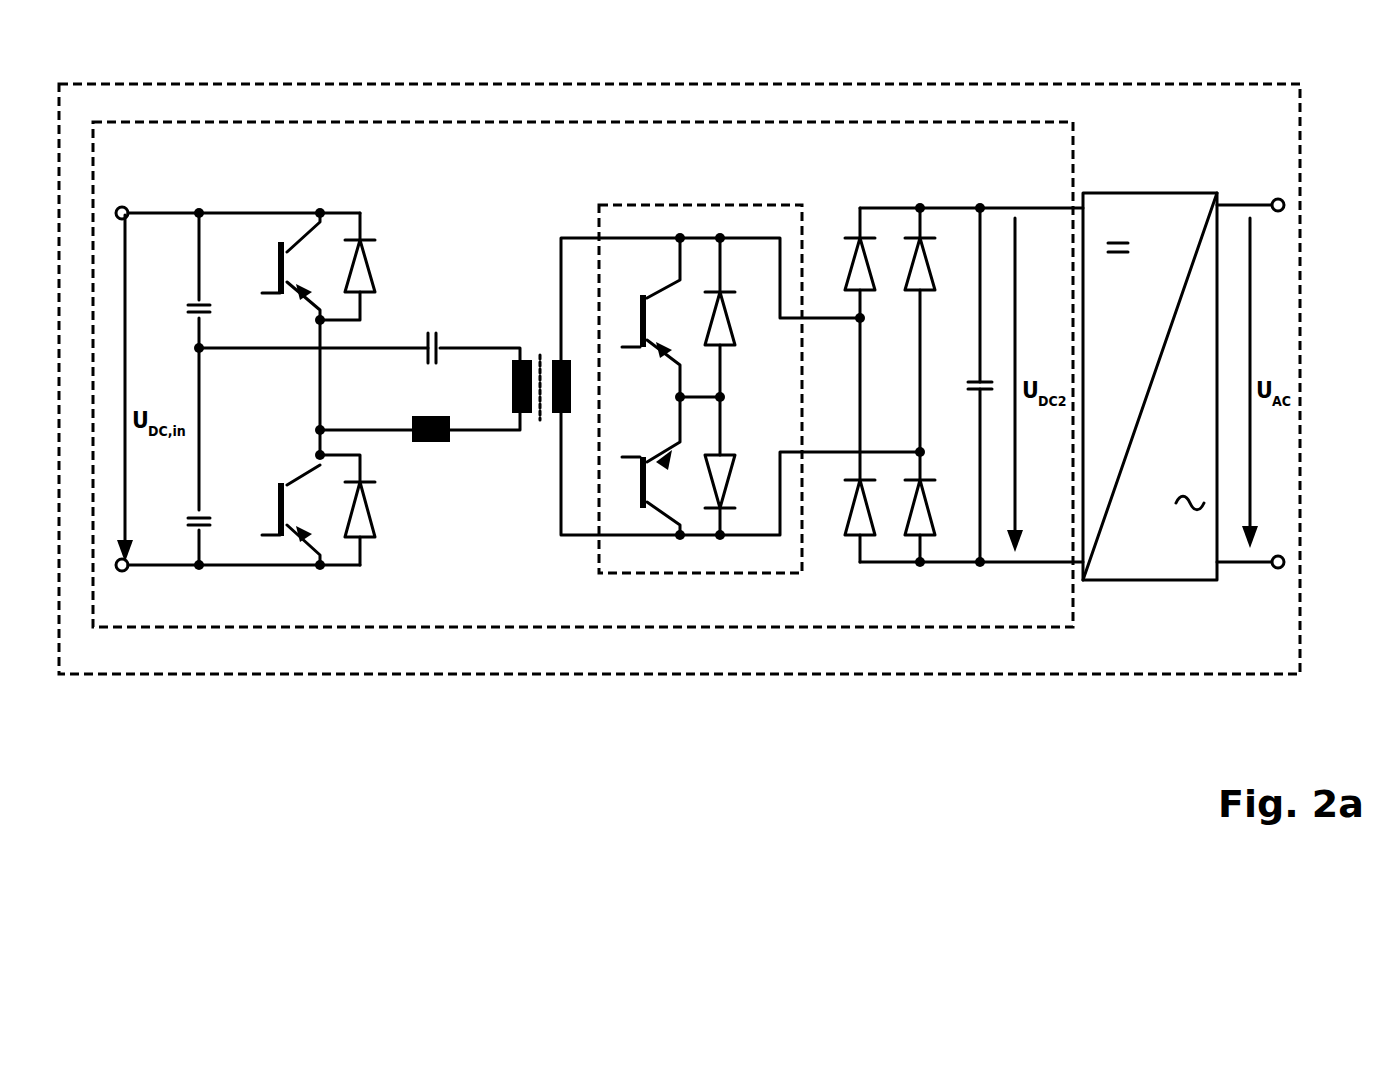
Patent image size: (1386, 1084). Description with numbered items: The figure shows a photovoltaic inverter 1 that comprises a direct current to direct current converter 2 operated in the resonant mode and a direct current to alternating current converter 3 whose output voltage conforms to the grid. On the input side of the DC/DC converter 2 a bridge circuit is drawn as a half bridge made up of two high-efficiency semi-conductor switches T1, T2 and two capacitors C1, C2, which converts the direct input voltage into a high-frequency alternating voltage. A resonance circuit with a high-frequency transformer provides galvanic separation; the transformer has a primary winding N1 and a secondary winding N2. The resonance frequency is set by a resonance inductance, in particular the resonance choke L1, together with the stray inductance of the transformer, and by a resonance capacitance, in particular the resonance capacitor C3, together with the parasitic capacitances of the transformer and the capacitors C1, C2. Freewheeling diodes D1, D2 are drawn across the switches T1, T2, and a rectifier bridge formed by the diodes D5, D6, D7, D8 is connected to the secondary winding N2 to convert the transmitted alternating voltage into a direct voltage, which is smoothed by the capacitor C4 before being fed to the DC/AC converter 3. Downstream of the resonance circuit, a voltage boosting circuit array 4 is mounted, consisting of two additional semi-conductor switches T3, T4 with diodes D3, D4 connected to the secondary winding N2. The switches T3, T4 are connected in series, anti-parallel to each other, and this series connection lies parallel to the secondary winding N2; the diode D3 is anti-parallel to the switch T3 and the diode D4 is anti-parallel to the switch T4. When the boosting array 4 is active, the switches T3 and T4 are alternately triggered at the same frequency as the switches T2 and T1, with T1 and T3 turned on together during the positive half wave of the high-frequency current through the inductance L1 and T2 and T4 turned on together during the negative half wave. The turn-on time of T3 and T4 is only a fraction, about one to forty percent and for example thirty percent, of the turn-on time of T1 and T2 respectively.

The photovoltaic inverter 1 is at (1274, 86).
The DC/DC converter 2 is at (731, 126).
The DC/AC converter 3 is at (1156, 212).
The voltage boosting circuit array 4 is at (600, 558).
The capacitor C1 is at (180, 314).
The capacitor C2 is at (180, 528).
The resonance capacitor C3 is at (430, 329).
The intermediate circuit capacitor C4 is at (962, 393).
The semi-conductor switch T1 is at (276, 512).
The semi-conductor switch T2 is at (276, 271).
The semi-conductor switch T3 is at (636, 326).
The semi-conductor switch T4 is at (636, 480).
The freewheeling diode D1 is at (381, 509).
The freewheeling diode D2 is at (381, 266).
The diode D3 is at (738, 318).
The diode D4 is at (738, 483).
The diode D5 is at (842, 264).
The diode D6 is at (941, 264).
The diode D7 is at (842, 507).
The diode D8 is at (941, 507).
The resonance choke L1 is at (431, 410).
The primary winding N1 is at (506, 386).
The secondary winding N2 is at (579, 386).